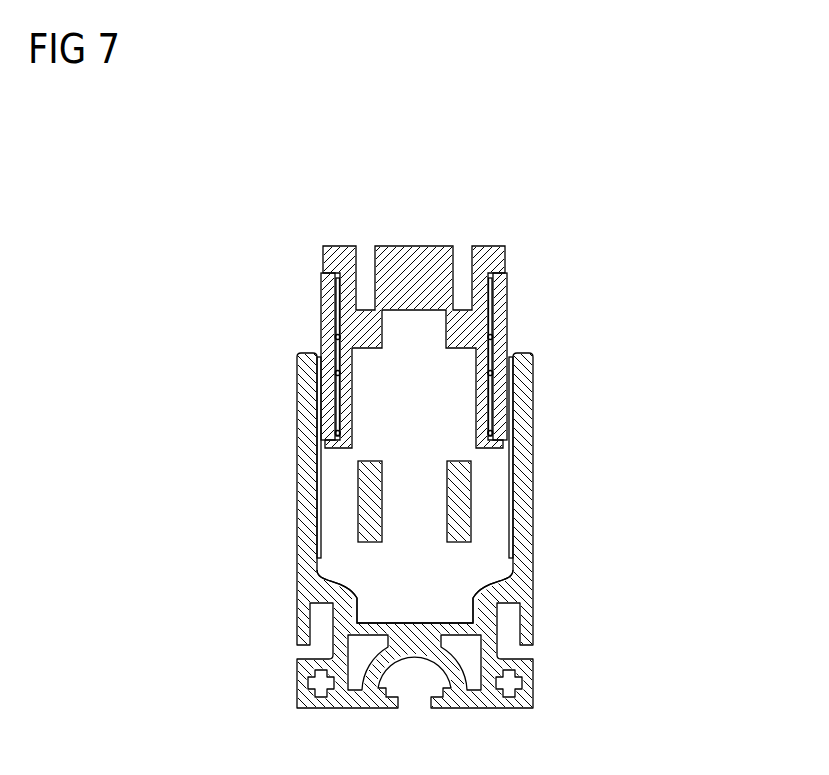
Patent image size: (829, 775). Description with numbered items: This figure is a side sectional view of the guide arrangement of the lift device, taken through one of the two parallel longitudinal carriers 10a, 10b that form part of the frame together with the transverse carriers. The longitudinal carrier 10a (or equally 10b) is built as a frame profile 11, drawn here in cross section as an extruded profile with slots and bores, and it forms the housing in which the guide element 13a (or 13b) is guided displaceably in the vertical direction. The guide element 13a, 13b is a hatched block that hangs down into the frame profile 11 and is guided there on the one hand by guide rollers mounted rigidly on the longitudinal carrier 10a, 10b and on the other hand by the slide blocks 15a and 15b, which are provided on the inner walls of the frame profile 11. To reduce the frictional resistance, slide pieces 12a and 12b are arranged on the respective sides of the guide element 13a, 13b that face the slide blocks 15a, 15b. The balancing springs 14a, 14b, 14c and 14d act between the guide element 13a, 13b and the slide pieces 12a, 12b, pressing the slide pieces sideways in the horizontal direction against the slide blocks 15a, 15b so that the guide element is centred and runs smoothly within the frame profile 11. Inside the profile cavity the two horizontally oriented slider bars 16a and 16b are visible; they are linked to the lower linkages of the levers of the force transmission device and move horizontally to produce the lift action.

The longitudinal carrier 10a is at (529, 530).
The longitudinal carrier 10b is at (549, 421).
The frame profile 11 is at (330, 619).
The slide piece 12a is at (320, 325).
The slide piece 12b is at (507, 329).
The guide element 13a is at (400, 271).
The guide element 13b is at (414, 347).
The balancing spring 14a is at (271, 267).
The balancing spring 14b is at (225, 385).
The balancing spring 14c is at (561, 267).
The balancing spring 14d is at (575, 375).
The slide block 15a is at (308, 478).
The slide block 15b is at (513, 487).
The slider bar 16a is at (246, 511).
The slider bar 16b is at (460, 507).